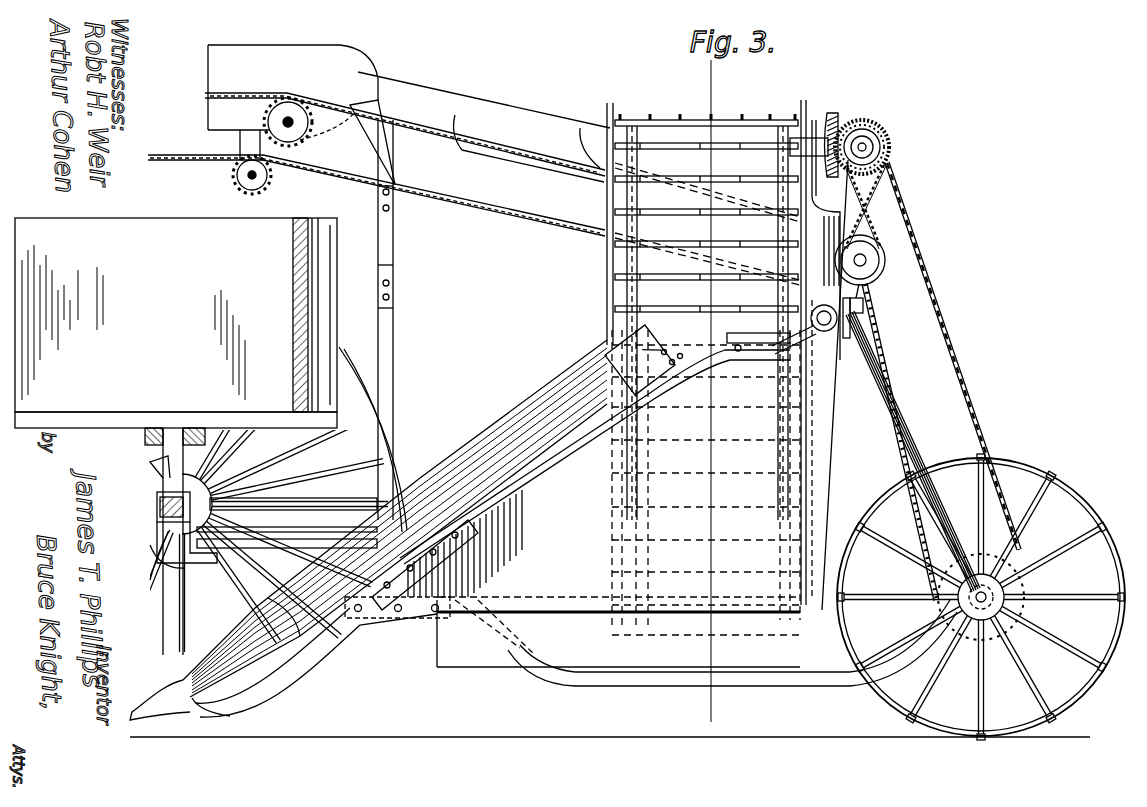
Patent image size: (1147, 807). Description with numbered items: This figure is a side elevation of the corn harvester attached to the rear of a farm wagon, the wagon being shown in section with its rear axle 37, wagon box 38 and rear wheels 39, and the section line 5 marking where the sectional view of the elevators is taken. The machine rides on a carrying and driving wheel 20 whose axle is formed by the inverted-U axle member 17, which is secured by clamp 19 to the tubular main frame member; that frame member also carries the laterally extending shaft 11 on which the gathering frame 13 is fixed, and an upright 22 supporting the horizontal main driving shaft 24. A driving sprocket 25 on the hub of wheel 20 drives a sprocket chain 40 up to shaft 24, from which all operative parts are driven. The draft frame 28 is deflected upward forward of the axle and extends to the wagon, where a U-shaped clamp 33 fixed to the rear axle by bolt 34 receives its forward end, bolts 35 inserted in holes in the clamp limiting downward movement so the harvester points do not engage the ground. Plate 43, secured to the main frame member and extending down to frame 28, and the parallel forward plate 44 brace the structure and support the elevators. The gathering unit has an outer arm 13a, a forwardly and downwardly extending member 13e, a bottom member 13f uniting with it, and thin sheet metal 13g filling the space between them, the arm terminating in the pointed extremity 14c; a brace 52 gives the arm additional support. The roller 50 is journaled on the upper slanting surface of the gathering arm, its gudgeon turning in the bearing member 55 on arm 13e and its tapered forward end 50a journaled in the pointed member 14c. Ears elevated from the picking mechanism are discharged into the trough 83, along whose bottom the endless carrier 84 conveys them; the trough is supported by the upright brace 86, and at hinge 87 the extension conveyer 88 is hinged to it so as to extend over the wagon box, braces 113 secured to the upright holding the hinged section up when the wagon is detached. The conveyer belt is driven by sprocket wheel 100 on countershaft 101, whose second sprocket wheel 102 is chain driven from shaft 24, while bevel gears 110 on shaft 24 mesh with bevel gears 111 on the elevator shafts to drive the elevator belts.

The section line 5— 5 is at (698, 82).
The shaft 11 is at (837, 337).
The gathering frame 13 is at (706, 374).
The outer gathering arm 13a is at (826, 405).
The forwardly and downwardly extending member 13e is at (525, 478).
The bottom member 13f is at (557, 597).
The thin sheet metal 13g is at (468, 543).
The pointed extremity 14c is at (152, 708).
The axle member 17 is at (912, 447).
The clamp 19 is at (852, 322).
The carrying and driving wheel 20 is at (1097, 502).
The upright 22 is at (866, 186).
The main driving shaft 24 is at (885, 132).
The driving sprocket 25 is at (1020, 600).
The draft frame 28 is at (590, 686).
The clamp 33 is at (150, 542).
The bolt 34 is at (157, 522).
The adjusting bolts 35 is at (165, 572).
The rear axle 37 is at (162, 500).
The wagon box 38 is at (140, 230).
The rear wheels 39 is at (350, 365).
The sprocket chain 40 is at (926, 282).
The plate 43 is at (807, 104).
The forward plate 44 is at (606, 108).
The roller 50 is at (522, 410).
The tapered forward end 50a is at (215, 620).
The brace 52 is at (700, 392).
The bearing member 55 is at (625, 340).
The carrier trough 83 is at (450, 97).
The endless carrier 84 is at (262, 92).
The upright brace 86 is at (394, 258).
The hinge 87 is at (347, 142).
The extension conveyer 88 is at (295, 52).
The sprocket wheel 100 is at (883, 237).
The countershaft 101 is at (886, 257).
The sprocket wheel 102 is at (872, 292).
The bevel gear 110 is at (866, 120).
The bevel gear 111 is at (834, 115).
The brace 113 is at (338, 150).